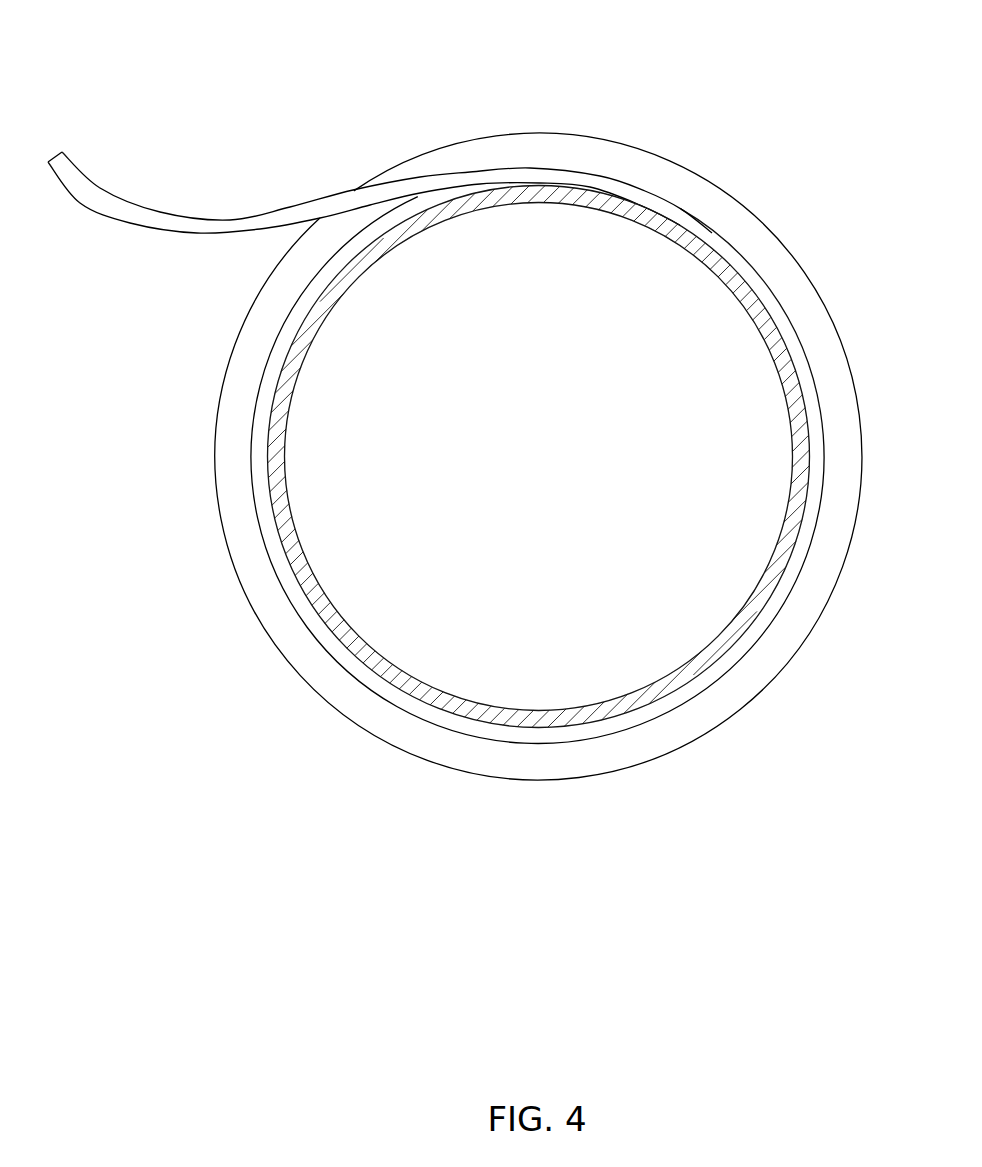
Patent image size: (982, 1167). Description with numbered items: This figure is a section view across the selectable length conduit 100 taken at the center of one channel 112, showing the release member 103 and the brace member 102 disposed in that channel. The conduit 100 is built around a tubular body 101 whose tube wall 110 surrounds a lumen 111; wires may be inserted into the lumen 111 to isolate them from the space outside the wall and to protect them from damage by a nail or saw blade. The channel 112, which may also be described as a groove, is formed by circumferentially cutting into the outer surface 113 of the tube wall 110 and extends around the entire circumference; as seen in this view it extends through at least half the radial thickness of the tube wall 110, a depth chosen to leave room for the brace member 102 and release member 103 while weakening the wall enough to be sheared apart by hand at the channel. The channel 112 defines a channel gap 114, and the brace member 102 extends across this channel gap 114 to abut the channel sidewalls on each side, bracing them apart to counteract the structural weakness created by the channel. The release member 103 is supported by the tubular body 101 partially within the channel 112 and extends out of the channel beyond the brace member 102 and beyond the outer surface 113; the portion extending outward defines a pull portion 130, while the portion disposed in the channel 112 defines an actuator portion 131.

The selectable length conduit 100 is at (342, 82).
The tubular body 101 is at (708, 140).
The brace member 102 is at (588, 153).
The release member 103 is at (132, 190).
The tube wall 110 is at (368, 255).
The lumen 111 is at (298, 365).
The channel 112 is at (792, 268).
The outer surface 113 is at (750, 211).
The channel gap 114 is at (807, 307).
The pull portion 130 is at (212, 225).
The actuator portion 131 is at (732, 257).